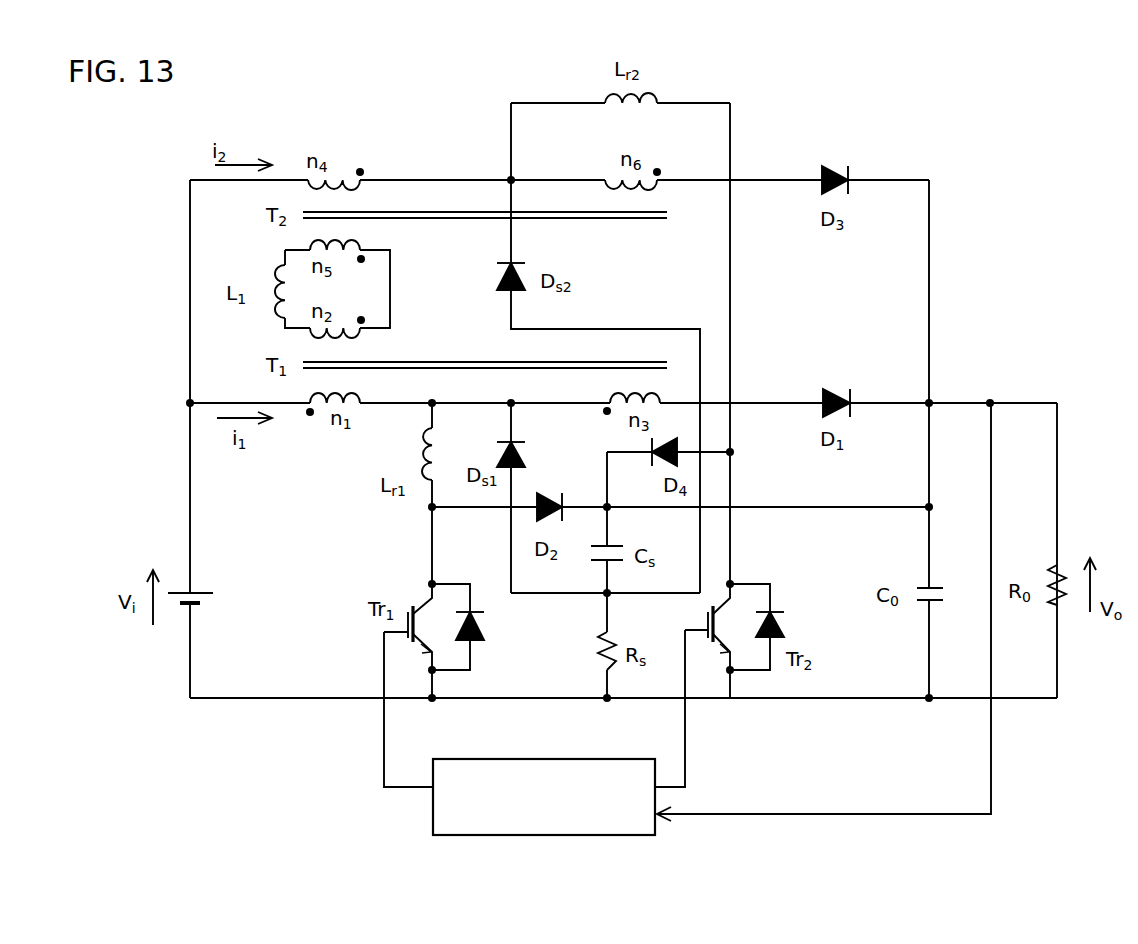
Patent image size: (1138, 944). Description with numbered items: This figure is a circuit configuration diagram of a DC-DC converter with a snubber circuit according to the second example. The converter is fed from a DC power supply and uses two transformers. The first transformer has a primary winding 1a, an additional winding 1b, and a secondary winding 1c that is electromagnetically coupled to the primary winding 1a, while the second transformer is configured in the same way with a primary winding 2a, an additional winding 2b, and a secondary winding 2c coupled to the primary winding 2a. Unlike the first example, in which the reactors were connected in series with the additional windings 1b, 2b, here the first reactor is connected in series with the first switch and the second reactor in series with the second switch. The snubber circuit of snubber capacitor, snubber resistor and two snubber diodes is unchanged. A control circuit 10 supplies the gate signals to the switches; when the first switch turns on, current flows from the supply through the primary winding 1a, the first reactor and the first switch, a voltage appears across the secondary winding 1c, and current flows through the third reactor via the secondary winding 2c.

The primary winding 1a is at (320, 418).
The additional winding 1b is at (660, 392).
The secondary winding 1c is at (358, 340).
The primary winding 2a is at (345, 160).
The additional winding 2b is at (610, 178).
The secondary winding 2c is at (356, 240).
The control circuit 10 is at (528, 759).